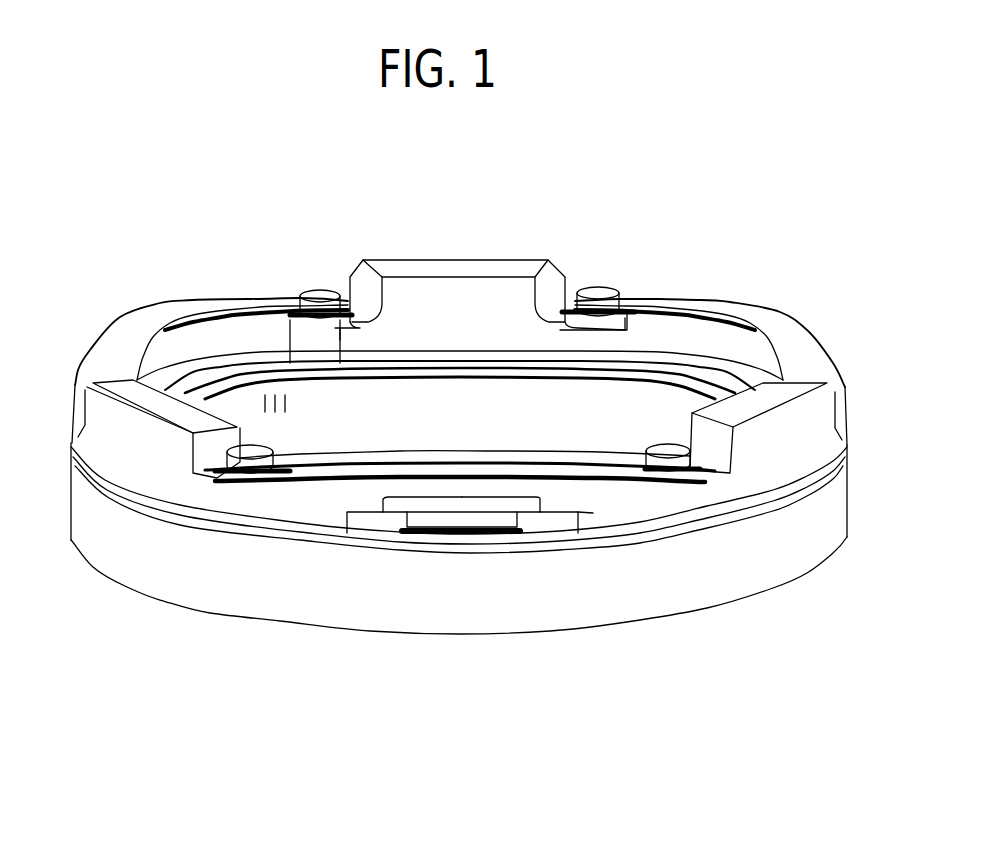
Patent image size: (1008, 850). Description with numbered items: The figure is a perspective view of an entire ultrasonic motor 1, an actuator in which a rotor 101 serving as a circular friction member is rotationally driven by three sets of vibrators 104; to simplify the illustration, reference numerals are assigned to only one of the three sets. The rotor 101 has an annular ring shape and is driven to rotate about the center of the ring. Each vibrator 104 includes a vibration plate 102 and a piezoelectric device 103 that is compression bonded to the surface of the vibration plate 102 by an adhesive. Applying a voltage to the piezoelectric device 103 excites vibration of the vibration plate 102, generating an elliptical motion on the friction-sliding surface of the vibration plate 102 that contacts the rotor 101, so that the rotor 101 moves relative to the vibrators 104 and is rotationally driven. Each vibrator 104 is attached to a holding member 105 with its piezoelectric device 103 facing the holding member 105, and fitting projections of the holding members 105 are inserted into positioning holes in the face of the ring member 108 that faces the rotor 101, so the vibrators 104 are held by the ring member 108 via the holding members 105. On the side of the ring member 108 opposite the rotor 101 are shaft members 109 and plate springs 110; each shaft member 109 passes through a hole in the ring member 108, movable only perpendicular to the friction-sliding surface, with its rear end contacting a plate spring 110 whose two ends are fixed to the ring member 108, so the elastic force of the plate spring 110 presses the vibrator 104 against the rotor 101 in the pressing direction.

The ultrasonic motor 1 is at (607, 247).
The rotor 101 is at (293, 597).
The vibration plate 102 is at (420, 557).
The piezoelectric device 103 is at (455, 528).
The vibrator 104 is at (480, 678).
The holding member 105 is at (507, 560).
The ring member 108 is at (593, 513).
The shaft member 109 is at (658, 447).
The plate spring 110 is at (560, 455).